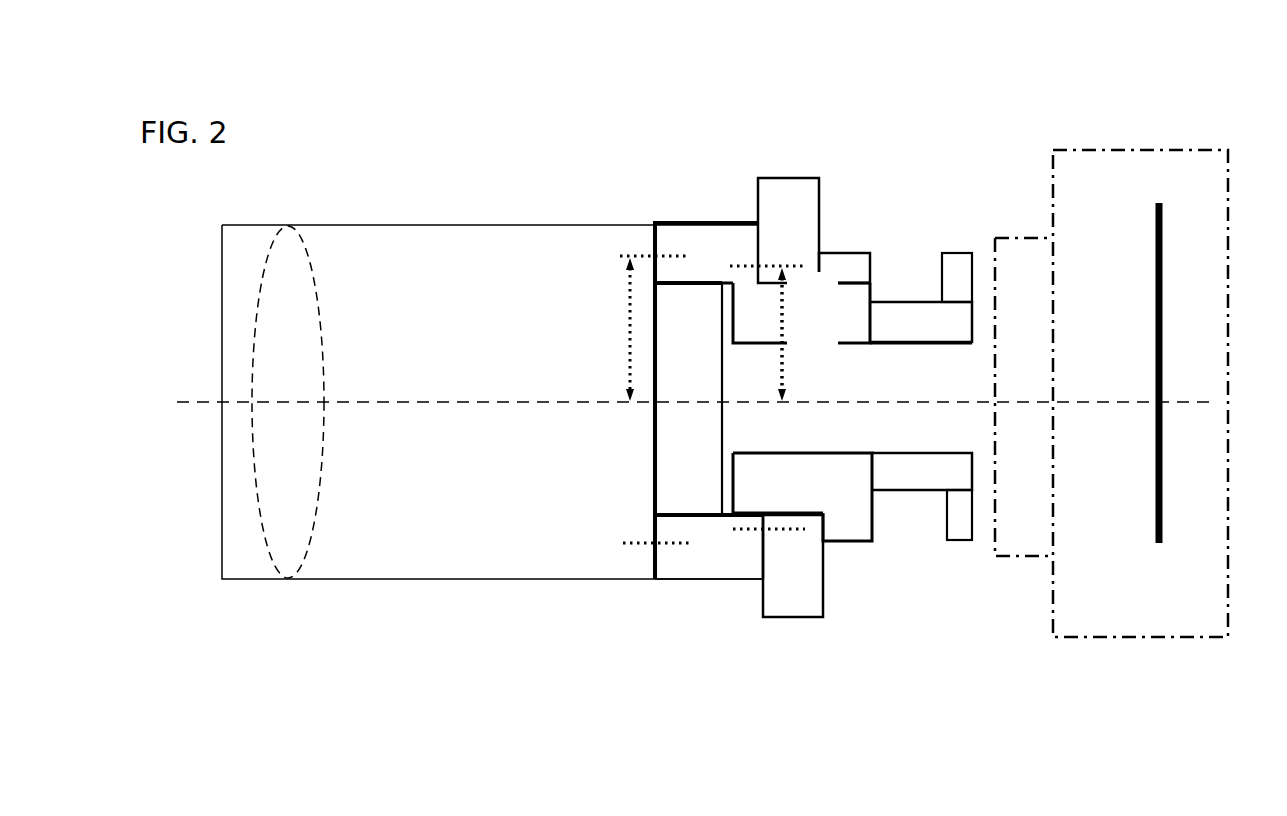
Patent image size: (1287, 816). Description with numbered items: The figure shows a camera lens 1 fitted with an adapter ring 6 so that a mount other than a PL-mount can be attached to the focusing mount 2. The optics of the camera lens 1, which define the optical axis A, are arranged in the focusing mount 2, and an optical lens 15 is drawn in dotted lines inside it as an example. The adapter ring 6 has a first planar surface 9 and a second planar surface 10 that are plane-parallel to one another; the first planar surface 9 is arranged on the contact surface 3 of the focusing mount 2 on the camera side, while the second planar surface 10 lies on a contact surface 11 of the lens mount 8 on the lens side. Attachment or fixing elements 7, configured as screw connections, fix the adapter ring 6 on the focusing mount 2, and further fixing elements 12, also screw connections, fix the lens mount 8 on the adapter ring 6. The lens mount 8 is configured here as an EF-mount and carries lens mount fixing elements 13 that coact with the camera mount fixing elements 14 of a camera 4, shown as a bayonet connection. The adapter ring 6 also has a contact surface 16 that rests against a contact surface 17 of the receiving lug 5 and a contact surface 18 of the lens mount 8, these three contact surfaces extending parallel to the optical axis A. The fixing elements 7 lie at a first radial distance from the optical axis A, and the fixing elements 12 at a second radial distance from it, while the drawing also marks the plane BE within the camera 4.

The camera lens 1 is at (517, 173).
The focusing mount 2 is at (493, 545).
The contact surface 3 is at (650, 240).
The camera 4 is at (1112, 182).
The receiving lug 5 is at (718, 443).
The adapter ring 6 is at (712, 221).
The attachment or fixing elements 7 is at (653, 543).
The lens mount 8 is at (838, 258).
The first planar surface 9 is at (662, 232).
The second planar surface 10 is at (752, 558).
The contact surface 11 is at (774, 558).
The attachment or fixing elements 12 is at (762, 257).
The lens mount fixing elements 13 is at (962, 525).
The camera mount attachment or fixing elements 14 is at (1003, 268).
The optical lens 15 is at (298, 548).
The contact surface 16 is at (697, 528).
The contact surface 17 is at (676, 508).
The contact surface 18 is at (752, 512).
The optical axis A is at (668, 405).
The image plane BE is at (1158, 548).